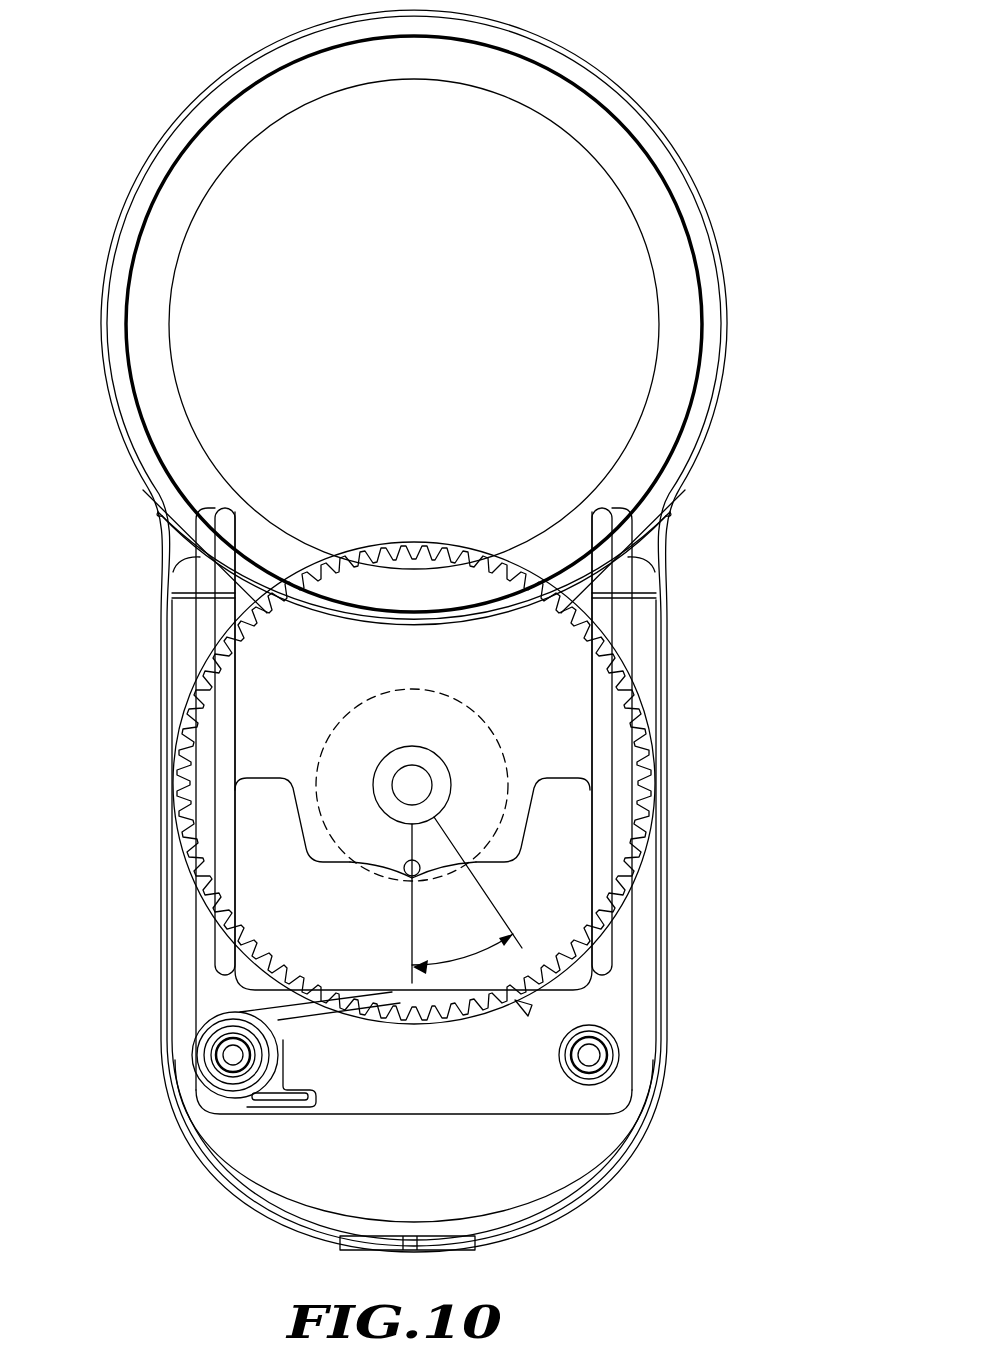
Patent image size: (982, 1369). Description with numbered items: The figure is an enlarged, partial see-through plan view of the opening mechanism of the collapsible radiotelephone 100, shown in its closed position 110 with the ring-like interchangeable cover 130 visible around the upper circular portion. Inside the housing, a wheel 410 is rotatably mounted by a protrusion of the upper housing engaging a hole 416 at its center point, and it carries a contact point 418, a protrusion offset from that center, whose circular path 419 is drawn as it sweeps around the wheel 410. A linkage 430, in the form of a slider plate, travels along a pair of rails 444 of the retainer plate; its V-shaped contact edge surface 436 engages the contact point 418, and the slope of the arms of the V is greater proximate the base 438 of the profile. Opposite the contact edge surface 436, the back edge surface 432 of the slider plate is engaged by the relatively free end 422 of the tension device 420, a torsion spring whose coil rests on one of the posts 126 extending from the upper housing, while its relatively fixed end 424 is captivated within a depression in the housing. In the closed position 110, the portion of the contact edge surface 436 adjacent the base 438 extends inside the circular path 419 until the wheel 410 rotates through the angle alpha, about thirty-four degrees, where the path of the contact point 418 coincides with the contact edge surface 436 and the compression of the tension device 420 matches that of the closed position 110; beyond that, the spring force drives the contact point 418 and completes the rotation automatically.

The closed position 110 is at (640, 50).
The radiotelephone 100 is at (806, 108).
The interchangeable cover 130 is at (700, 248).
The wheel 410 is at (557, 672).
The rails 444 is at (226, 739).
The linkage 430 is at (557, 882).
The path 419 is at (352, 712).
The hole 416 is at (423, 785).
The contact point 418 is at (408, 862).
The base 438 is at (410, 880).
The contact edge surface 436 is at (495, 858).
The relatively free end 422 is at (286, 1000).
The back edge surface 432 is at (378, 1026).
The tension device 420 is at (205, 1032).
The posts 126 is at (252, 1056).
The relatively fixed end 424 is at (243, 1098).